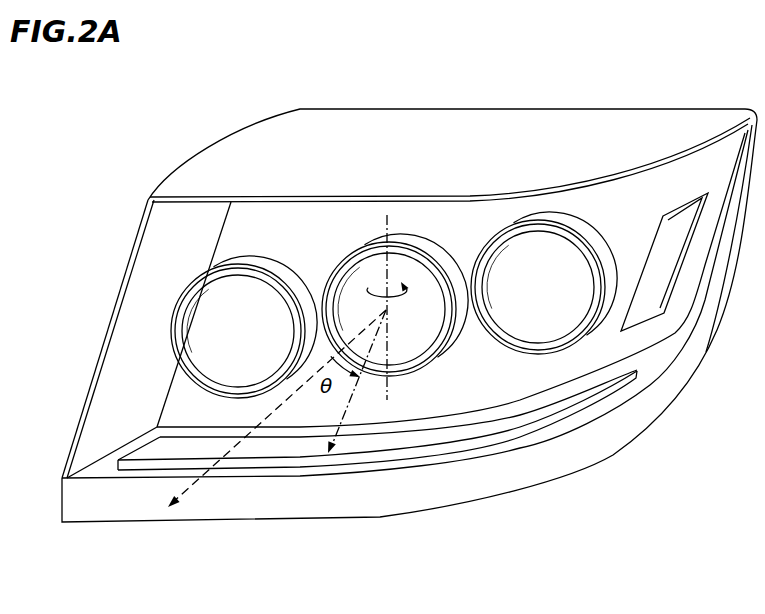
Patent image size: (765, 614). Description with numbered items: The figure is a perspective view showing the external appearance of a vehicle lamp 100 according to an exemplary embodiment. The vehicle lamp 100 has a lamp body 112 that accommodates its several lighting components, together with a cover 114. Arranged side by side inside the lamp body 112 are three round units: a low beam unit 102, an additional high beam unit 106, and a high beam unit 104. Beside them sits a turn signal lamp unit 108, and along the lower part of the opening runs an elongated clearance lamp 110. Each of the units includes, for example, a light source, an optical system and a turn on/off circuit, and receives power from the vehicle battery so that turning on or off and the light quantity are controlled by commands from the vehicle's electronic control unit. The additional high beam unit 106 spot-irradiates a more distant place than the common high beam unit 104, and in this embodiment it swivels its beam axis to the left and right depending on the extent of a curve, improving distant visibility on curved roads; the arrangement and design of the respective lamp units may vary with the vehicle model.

The vehicle lamp 100 is at (636, 590).
The low beam unit 102 is at (212, 368).
The high beam unit 104 is at (525, 333).
The additional high beam unit 106 is at (431, 338).
The turn signal lamp unit 108 is at (668, 223).
The clearance lamp 110 is at (438, 445).
The lamp body 112 is at (479, 127).
The cover 114 is at (112, 406).